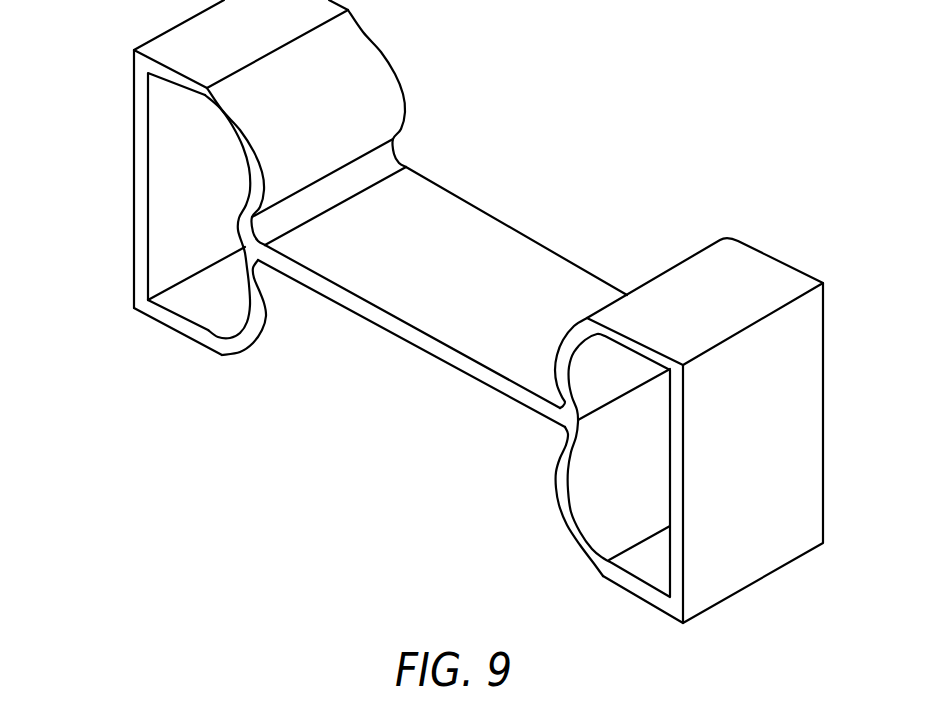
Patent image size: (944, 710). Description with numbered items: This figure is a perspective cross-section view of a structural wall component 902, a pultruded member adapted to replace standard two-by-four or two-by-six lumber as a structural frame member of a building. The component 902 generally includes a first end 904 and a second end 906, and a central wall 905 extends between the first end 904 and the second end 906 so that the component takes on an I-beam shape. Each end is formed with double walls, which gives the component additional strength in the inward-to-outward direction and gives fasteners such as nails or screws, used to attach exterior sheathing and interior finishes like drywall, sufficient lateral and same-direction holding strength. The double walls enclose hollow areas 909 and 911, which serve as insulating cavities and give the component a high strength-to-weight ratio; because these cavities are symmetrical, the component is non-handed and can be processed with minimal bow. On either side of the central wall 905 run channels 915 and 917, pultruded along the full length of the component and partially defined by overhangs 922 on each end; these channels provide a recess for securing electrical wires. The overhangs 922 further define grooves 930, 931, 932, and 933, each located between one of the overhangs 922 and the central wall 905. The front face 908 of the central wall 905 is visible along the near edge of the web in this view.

The structural wall component 902 is at (788, 263).
The first end 904 is at (753, 573).
The central wall 905 is at (508, 238).
The second end 906 is at (134, 180).
The front face of connecting web 908 is at (433, 360).
The hollow area 909 is at (653, 573).
The hollow area 911 is at (187, 308).
The channel 915 is at (510, 188).
The channel 917 is at (442, 401).
The overhang 922 is at (404, 100).
The groove 930 is at (392, 158).
The groove 931 is at (560, 400).
The groove 932 is at (258, 268).
The groove 933 is at (562, 442).